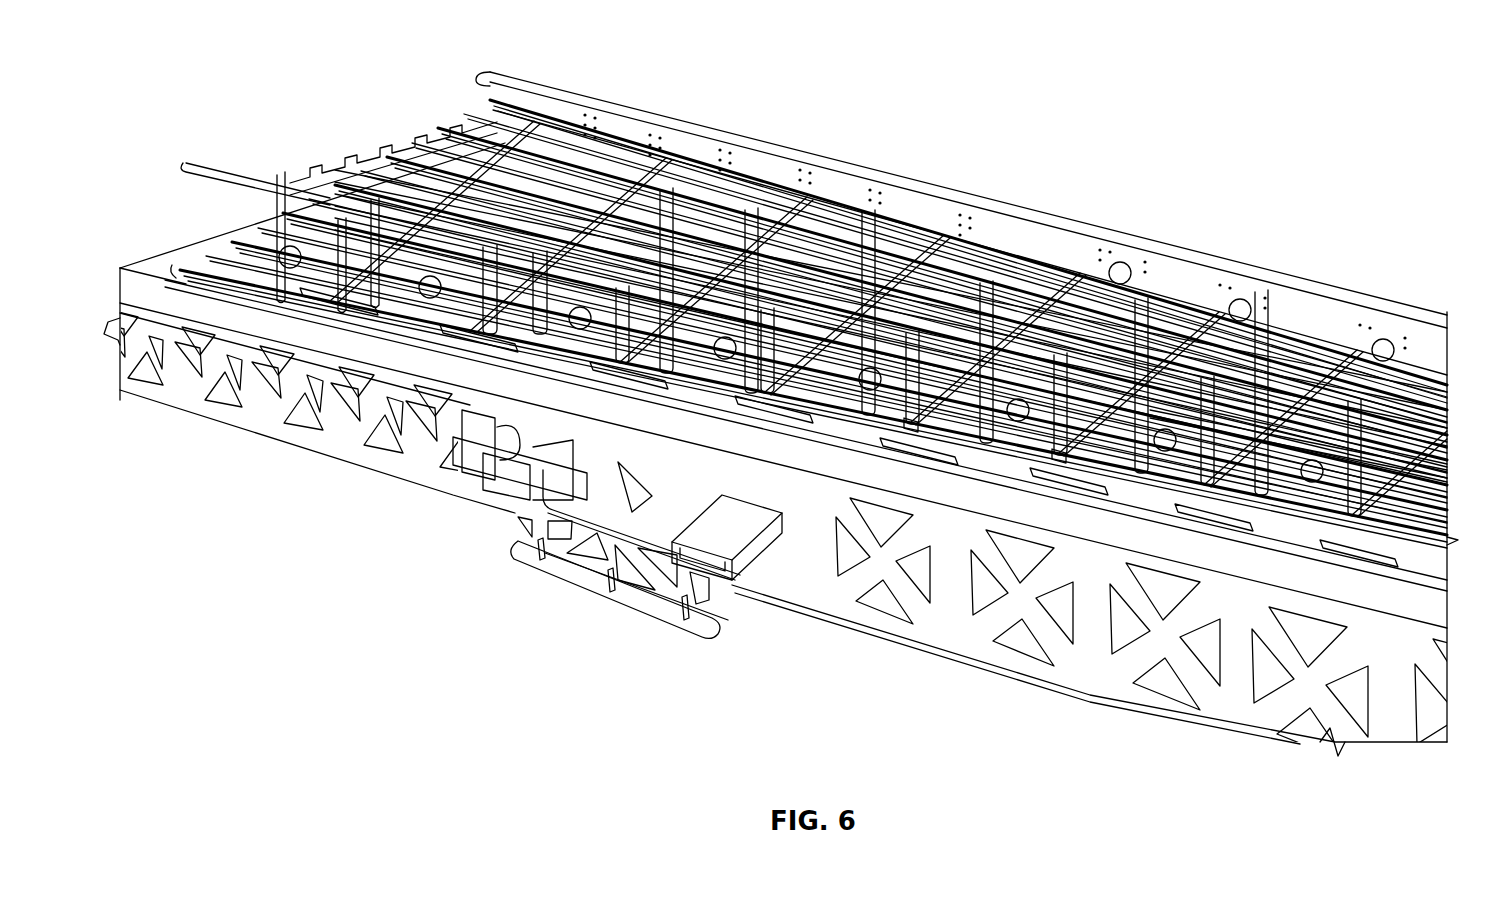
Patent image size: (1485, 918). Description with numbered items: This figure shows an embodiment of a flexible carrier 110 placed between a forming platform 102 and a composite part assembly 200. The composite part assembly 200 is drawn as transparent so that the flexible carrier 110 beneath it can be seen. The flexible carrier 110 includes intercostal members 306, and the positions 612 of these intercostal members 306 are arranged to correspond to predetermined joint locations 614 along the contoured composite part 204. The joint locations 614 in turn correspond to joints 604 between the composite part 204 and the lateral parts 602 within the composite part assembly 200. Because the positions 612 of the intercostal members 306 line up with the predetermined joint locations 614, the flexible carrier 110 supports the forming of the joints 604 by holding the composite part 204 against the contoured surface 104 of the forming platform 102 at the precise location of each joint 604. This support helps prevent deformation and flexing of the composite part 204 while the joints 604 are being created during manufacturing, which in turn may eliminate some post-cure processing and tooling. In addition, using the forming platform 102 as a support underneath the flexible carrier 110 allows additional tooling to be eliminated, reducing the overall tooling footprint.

The forming platform 102 is at (480, 545).
The contoured surface 104 is at (795, 432).
The flexible carrier 110 is at (490, 345).
The composite part assembly 200 is at (1316, 258).
The composite part 204 is at (1187, 387).
The intercostal members 306 is at (948, 392).
The lateral parts 602 is at (1058, 415).
The joints 604 is at (930, 425).
The positions 612 is at (905, 470).
The joint locations 614 is at (905, 408).